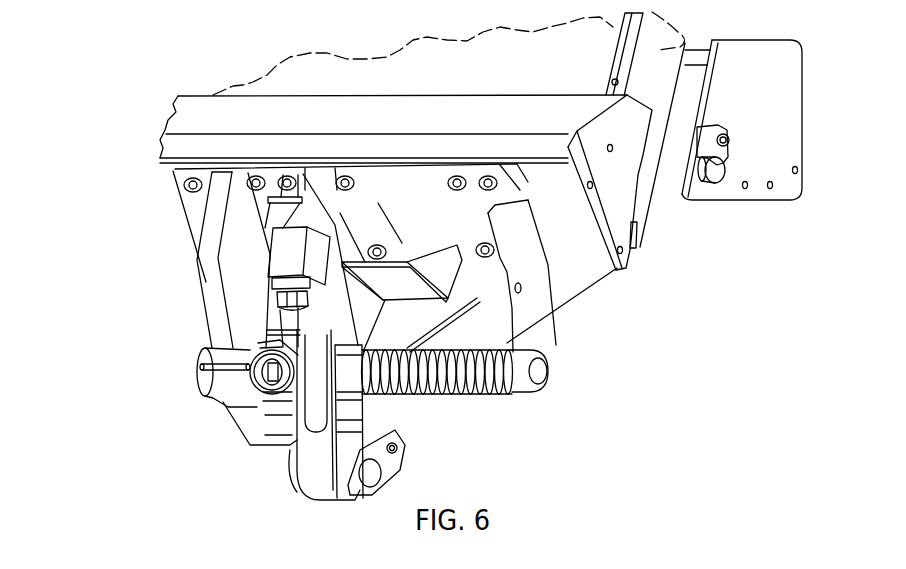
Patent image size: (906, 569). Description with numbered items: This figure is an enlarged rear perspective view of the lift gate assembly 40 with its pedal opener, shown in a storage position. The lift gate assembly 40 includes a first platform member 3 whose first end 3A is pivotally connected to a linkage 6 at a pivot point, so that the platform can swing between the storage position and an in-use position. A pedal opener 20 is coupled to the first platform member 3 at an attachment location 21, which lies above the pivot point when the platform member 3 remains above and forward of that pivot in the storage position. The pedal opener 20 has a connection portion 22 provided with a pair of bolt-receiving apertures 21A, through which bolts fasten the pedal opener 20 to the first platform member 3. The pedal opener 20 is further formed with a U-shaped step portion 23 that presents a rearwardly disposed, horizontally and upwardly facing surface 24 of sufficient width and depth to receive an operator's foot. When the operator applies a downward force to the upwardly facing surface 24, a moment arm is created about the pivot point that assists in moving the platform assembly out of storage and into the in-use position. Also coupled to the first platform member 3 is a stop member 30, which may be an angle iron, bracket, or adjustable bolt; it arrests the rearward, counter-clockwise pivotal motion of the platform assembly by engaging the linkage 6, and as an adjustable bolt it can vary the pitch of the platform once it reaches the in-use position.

The lift gate assembly 40 is at (138, 48).
The first platform member 3 is at (481, 126).
The first end 3A is at (623, 192).
The attachment location 21 is at (478, 186).
The bolt-receiving apertures 21A is at (332, 191).
The connection portion 22 is at (377, 182).
The upwardly facing surface 24 is at (384, 252).
The U-shaped step portion 23 is at (432, 265).
The pedal opener 20 is at (424, 292).
The stop member 30 is at (280, 300).
The linkage 6 is at (302, 493).